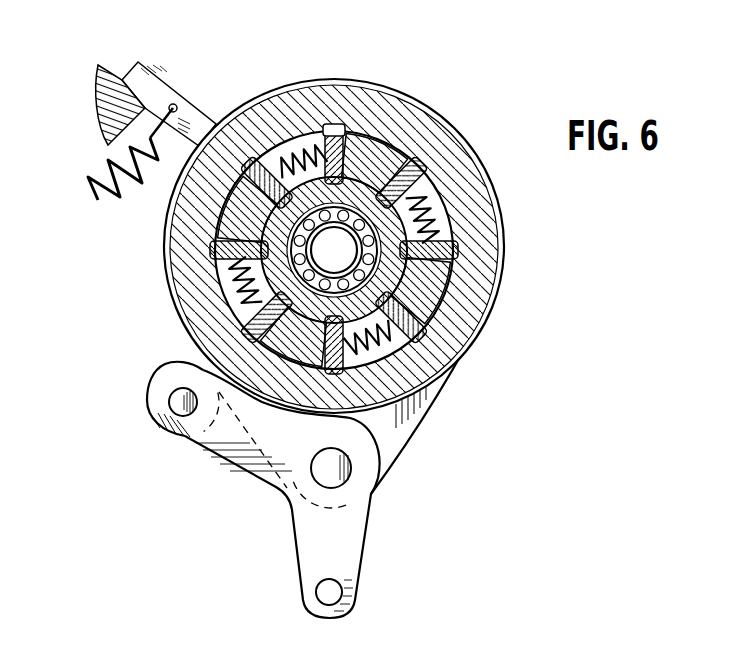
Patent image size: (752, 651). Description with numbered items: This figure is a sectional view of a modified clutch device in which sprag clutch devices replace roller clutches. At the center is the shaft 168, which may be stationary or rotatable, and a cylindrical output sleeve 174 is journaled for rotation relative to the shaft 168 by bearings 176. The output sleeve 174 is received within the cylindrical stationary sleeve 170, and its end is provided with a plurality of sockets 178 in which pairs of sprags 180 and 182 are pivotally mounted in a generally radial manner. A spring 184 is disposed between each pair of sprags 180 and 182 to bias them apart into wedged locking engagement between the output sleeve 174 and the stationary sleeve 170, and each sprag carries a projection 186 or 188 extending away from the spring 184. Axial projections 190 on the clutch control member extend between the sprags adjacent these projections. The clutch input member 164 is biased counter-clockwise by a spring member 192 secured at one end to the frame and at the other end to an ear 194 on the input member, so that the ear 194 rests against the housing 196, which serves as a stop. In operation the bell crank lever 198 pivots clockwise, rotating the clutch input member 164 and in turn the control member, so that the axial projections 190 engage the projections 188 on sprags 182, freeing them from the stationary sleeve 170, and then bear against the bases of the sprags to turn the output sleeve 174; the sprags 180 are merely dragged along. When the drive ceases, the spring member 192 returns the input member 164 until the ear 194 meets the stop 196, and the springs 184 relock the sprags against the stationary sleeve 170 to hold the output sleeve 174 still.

The clutch input member 164 is at (410, 407).
The shaft 168 is at (345, 258).
The stationary sleeve 170 is at (477, 225).
The output sleeve 174 is at (395, 280).
The bearings 176 is at (407, 153).
The sockets 178 is at (380, 187).
The sprag 180 is at (341, 128).
The sprag 182 is at (265, 170).
The spring 184 is at (298, 165).
The projection 186 is at (330, 128).
The projection 188 is at (248, 160).
The axial projections 190 is at (357, 210).
The spring member 192 is at (102, 165).
The ear 194 is at (155, 82).
The housing 196 is at (98, 92).
The bell crank lever 198 is at (350, 553).